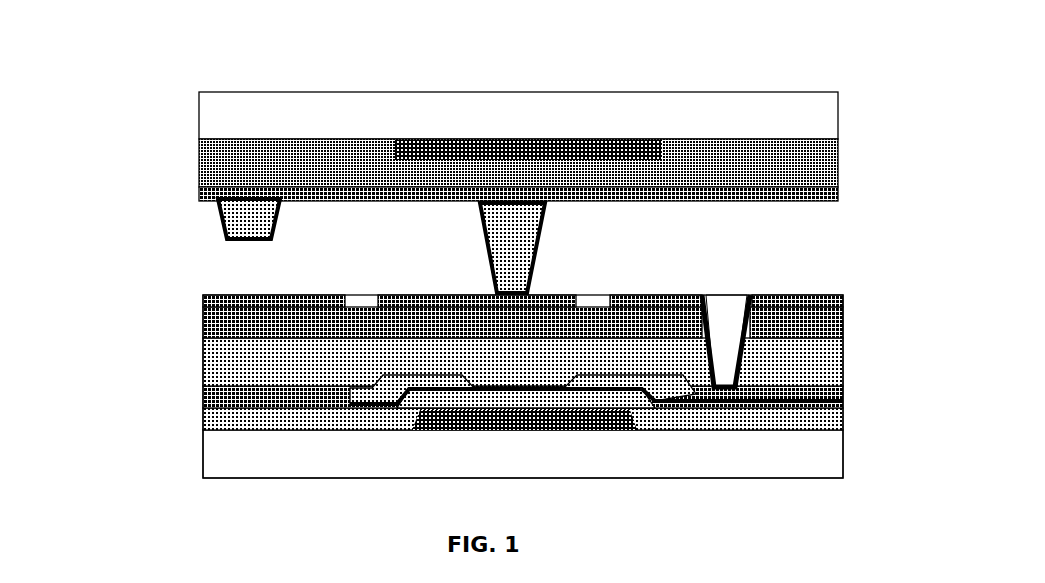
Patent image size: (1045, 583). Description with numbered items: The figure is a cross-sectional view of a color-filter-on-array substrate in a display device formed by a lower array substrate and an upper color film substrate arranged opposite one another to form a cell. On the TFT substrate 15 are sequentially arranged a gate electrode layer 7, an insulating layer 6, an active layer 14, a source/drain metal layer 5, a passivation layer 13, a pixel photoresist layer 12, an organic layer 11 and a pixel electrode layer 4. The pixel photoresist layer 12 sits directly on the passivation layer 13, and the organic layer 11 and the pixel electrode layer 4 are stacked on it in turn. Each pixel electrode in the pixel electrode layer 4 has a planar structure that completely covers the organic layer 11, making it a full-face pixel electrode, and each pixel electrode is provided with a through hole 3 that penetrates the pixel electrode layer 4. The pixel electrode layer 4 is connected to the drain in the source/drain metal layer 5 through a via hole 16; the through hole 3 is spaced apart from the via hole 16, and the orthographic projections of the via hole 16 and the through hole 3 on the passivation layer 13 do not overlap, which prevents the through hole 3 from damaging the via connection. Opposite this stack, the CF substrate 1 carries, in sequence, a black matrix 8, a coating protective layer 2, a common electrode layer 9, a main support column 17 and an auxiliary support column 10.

The CF substrate 1 is at (745, 110).
The coating protective layer 2 is at (760, 173).
The through hole 3 is at (345, 304).
The pixel electrode layer 4 is at (752, 298).
The source/drain metal layer 5 is at (697, 399).
The insulating layer 6 is at (787, 419).
The gate electrode layer 7 is at (535, 423).
The black matrix 8 is at (457, 150).
The common electrode layer 9 is at (262, 194).
The auxiliary support column 10 is at (248, 228).
The organic layer 11 is at (225, 332).
The pixel photoresist layer 12 is at (232, 369).
The passivation layer 13 is at (220, 400).
The active layer 14 is at (355, 404).
The TFT substrate 15 is at (232, 453).
The via hole 16 is at (718, 318).
The main support column 17 is at (508, 218).